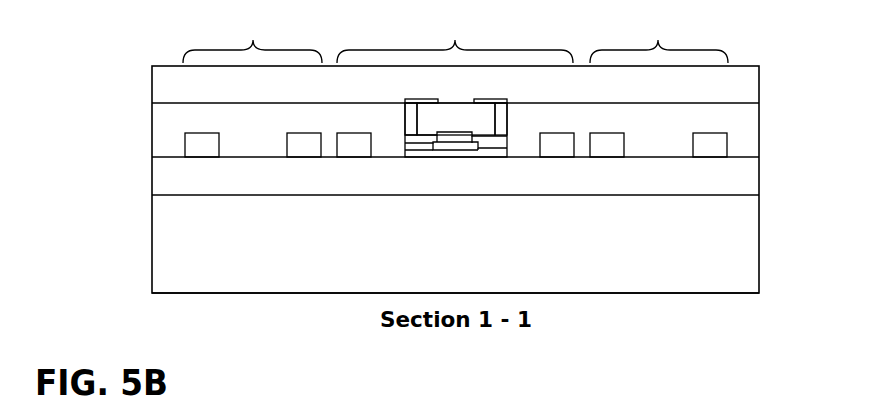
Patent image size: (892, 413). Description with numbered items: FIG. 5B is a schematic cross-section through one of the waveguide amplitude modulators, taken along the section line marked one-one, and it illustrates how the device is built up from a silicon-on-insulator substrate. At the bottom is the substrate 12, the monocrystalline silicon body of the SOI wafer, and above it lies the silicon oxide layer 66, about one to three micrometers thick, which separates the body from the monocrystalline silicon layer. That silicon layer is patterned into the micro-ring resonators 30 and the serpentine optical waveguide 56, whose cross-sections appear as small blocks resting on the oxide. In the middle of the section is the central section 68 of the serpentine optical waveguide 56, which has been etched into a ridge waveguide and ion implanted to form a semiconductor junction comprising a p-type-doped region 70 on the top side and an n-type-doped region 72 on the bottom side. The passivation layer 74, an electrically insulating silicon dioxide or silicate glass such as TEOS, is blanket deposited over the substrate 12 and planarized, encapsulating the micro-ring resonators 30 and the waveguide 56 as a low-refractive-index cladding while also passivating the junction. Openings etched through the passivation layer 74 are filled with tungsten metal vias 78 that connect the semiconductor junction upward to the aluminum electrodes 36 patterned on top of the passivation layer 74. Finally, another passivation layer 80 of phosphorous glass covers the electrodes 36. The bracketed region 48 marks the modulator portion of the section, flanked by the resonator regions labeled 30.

The substrate 12 is at (185, 264).
The micro-ring resonators 30 is at (455, 39).
The electrodes 36 is at (431, 99).
The device region 48 is at (455, 86).
The serpentine optical waveguide 56 is at (354, 148).
The silicon oxide layer 66 is at (185, 184).
The central section 68 is at (455, 131).
The p-type-doped region 70 is at (452, 136).
The n-type-doped region 72 is at (461, 148).
The passivation layer 74 is at (151, 133).
The metal vias 78 is at (404, 116).
The passivation layer 80 is at (185, 94).